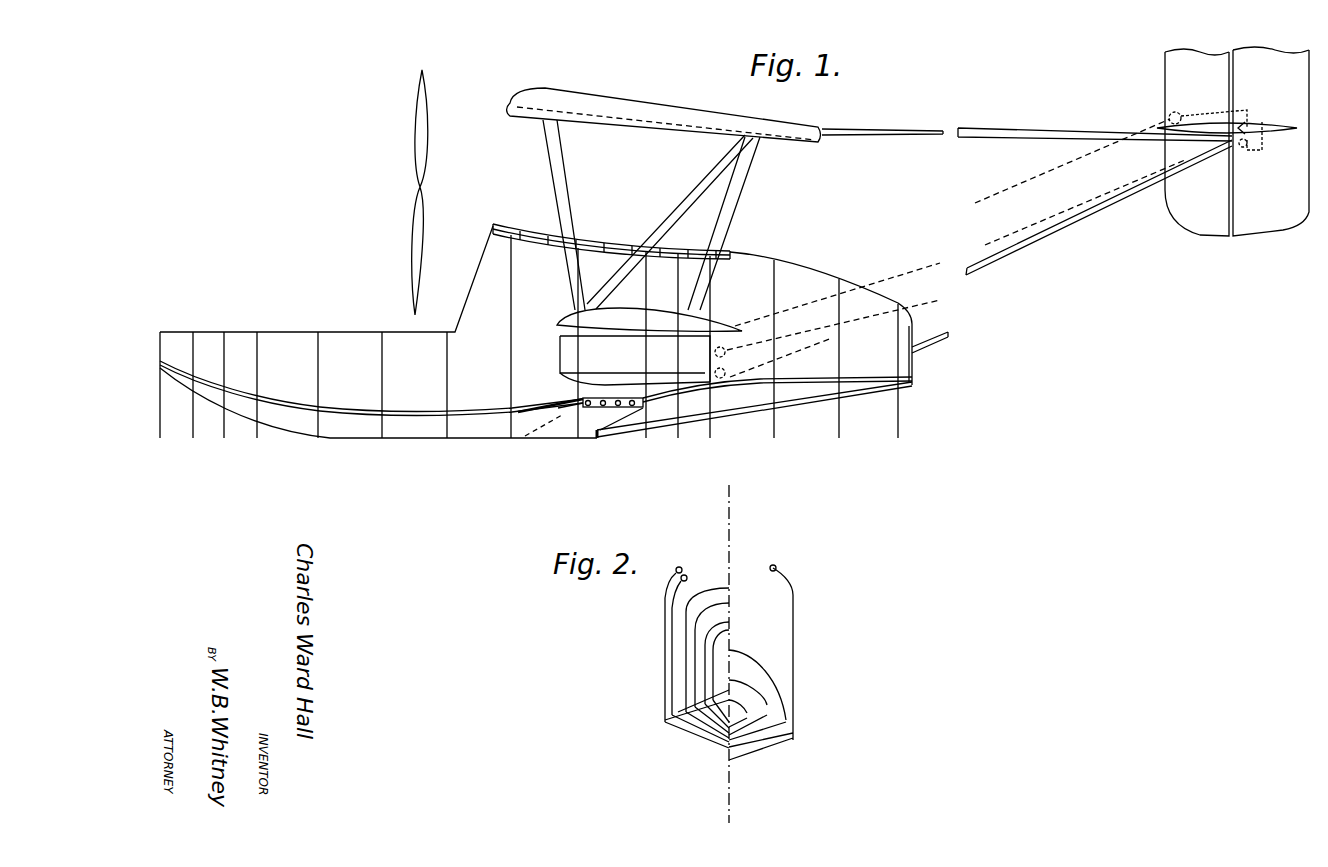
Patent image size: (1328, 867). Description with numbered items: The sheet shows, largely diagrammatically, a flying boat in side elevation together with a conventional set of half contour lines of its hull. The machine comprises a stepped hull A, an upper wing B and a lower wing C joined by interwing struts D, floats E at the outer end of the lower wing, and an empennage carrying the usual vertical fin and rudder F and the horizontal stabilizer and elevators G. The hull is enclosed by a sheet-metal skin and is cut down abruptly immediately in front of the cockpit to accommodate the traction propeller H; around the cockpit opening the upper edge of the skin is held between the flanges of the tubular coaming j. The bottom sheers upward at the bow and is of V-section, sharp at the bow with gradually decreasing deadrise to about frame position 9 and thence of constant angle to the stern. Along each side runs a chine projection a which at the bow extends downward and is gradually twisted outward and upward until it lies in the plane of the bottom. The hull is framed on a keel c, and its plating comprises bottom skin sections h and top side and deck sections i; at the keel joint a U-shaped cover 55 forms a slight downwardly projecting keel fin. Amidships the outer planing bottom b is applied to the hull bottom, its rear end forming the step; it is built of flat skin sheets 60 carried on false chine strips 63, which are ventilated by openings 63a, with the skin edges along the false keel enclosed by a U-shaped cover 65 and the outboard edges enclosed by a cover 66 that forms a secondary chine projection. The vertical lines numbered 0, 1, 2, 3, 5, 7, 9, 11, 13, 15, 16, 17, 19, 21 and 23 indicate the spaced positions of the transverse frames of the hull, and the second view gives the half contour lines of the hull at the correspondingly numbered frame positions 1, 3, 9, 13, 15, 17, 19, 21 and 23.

In FIG. 1, the stepped hull A is at (483, 270).
In FIG. 1, the upper wing B is at (633, 97).
In FIG. 1, the lower wing C is at (633, 313).
In FIG. 1, the interwing struts D is at (562, 192).
In FIG. 1, the floats E is at (560, 352).
In FIG. 1, the vertical fin and rudder F is at (1298, 99).
In FIG. 1, the horizontal stabilizer and elevators G is at (1265, 130).
In FIG. 1, the traction propeller H is at (412, 131).
In FIG. 1, the chine projection a is at (307, 398).
In FIG. 1, the outer planing bottom b is at (612, 408).
In FIG. 1, the keel c is at (298, 438).
In FIG. 1, the bottom skin sections h is at (412, 424).
In FIG. 1, the top side skin sections i is at (358, 352).
In FIG. 1, the flanged tubular coaming j is at (596, 248).
In FIG. 1, the U-shaped keel cover 55 is at (759, 412).
In FIG. 1, the skin sheets 60 is at (590, 418).
In FIG. 1, the false chine strips 63 is at (586, 401).
In FIG. 1, the ventilating openings 63a is at (632, 400).
In FIG. 1, the U-shaped cover 65 is at (540, 432).
In FIG. 1, the cover 66 is at (562, 407).
In FIG. 1, the station 0 is at (160, 393).
In FIG. 1, the frame position 1 is at (193, 393).
In FIG. 2, the frame position 1 is at (740, 727).
In FIG. 1, the frame position 2 is at (224, 393).
In FIG. 1, the frame position 3 is at (257, 393).
In FIG. 2, the frame position 3 is at (757, 730).
In FIG. 1, the frame position 5 is at (318, 393).
In FIG. 1, the frame position 7 is at (382, 393).
In FIG. 1, the frame position 9 is at (447, 393).
In FIG. 2, the frame position 9 is at (777, 745).
In FIG. 1, the frame position 11 is at (510, 345).
In FIG. 1, the frame position 13 is at (577, 351).
In FIG. 2, the frame position 13 is at (793, 680).
In FIG. 1, the frame position 15 is at (645, 353).
In FIG. 2, the frame position 15 is at (728, 735).
In FIG. 1, the frame position 16 is at (678, 354).
In FIG. 1, the frame position 17 is at (709, 355).
In FIG. 2, the frame position 17 is at (716, 722).
In FIG. 1, the frame position 19 is at (773, 357).
In FIG. 2, the frame position 19 is at (706, 712).
In FIG. 1, the frame position 21 is at (838, 367).
In FIG. 2, the frame position 21 is at (690, 714).
In FIG. 1, the frame position 23 is at (897, 379).
In FIG. 2, the frame position 23 is at (668, 717).